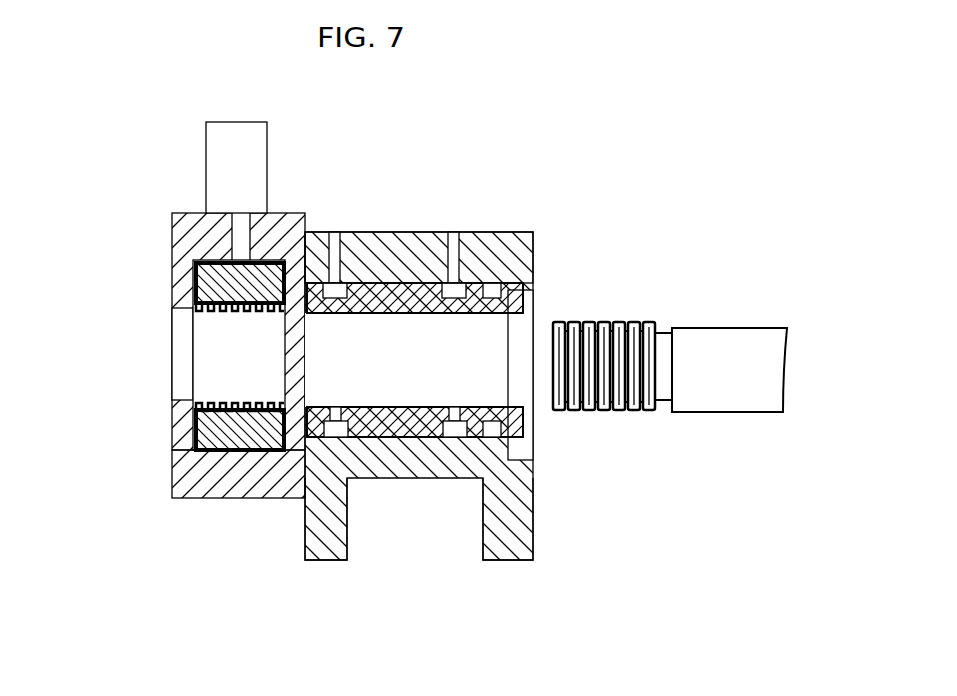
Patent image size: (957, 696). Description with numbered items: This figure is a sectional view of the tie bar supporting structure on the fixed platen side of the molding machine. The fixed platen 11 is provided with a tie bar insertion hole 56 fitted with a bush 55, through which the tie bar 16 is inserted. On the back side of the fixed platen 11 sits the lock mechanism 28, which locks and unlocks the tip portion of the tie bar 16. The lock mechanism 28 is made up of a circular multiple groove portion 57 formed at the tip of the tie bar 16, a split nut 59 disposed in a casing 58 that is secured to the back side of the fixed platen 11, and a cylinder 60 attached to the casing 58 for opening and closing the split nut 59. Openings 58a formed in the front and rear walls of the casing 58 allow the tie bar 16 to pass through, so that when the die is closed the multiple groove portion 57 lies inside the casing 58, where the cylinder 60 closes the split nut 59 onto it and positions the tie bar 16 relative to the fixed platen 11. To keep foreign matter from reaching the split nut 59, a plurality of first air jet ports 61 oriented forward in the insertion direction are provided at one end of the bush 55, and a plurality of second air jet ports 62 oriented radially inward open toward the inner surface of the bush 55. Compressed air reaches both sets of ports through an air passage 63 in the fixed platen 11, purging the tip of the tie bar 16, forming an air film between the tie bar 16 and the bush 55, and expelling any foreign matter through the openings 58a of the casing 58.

The fixed platen 11 is at (531, 534).
The tie bar 16 is at (733, 348).
The lock mechanism 28 is at (170, 222).
The bush 55 is at (428, 437).
The tie bar insertion hole 56 is at (387, 440).
The multiple groove portion 57 is at (625, 326).
The casing 58 is at (222, 478).
The openings 58a is at (295, 400).
The split nut 59 is at (178, 280).
The cylinder 60 is at (236, 178).
The first air jet ports 61 is at (525, 310).
The second air jet ports 62 is at (313, 232).
The air passage 63 is at (432, 232).